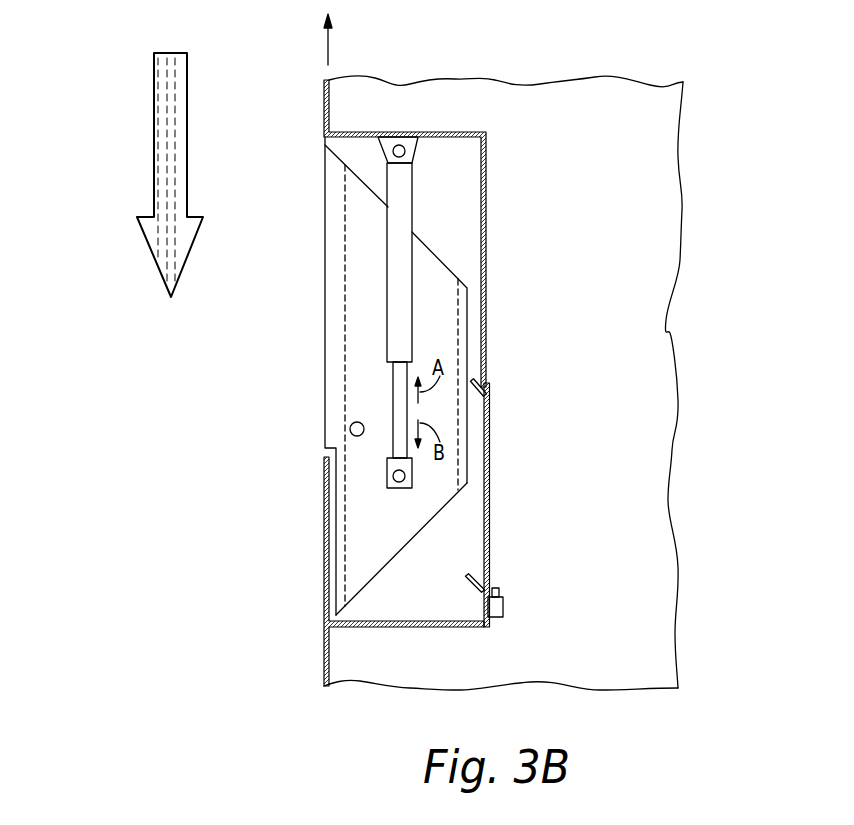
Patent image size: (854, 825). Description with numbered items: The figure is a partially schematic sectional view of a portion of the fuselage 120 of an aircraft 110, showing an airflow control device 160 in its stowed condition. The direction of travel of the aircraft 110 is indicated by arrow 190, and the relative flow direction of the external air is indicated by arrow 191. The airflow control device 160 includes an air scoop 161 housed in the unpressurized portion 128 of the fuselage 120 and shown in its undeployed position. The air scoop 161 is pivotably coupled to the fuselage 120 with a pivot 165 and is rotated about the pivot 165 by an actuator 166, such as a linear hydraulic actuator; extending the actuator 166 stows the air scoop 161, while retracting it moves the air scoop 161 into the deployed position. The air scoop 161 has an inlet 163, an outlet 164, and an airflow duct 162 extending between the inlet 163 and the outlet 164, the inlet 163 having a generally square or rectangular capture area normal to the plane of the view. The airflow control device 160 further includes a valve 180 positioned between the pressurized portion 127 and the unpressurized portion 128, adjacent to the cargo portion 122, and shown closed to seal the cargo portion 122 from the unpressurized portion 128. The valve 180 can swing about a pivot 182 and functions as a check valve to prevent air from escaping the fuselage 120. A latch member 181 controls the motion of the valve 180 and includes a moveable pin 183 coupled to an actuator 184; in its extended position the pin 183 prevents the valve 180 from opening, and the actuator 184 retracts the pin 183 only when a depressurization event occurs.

The aircraft 110 is at (279, 593).
The fuselage 120 is at (323, 118).
The cargo portion 122 is at (655, 281).
The pressurized portion 127 is at (677, 157).
The unpressurized portion 128 is at (358, 154).
The airflow control device 160 is at (384, 416).
The air scoop 161 is at (325, 423).
The airflow duct 162 is at (369, 312).
The inlet 163 is at (434, 257).
The outlet 164 is at (400, 548).
The pivot 165 is at (357, 437).
The actuator 166 is at (388, 240).
The valve 180 is at (490, 478).
The latch member 181 is at (554, 593).
The pivot 182 is at (492, 385).
The moveable pin 183 is at (497, 592).
The actuator 184 is at (516, 606).
The arrow 190 is at (329, 52).
The arrow 191 is at (154, 146).